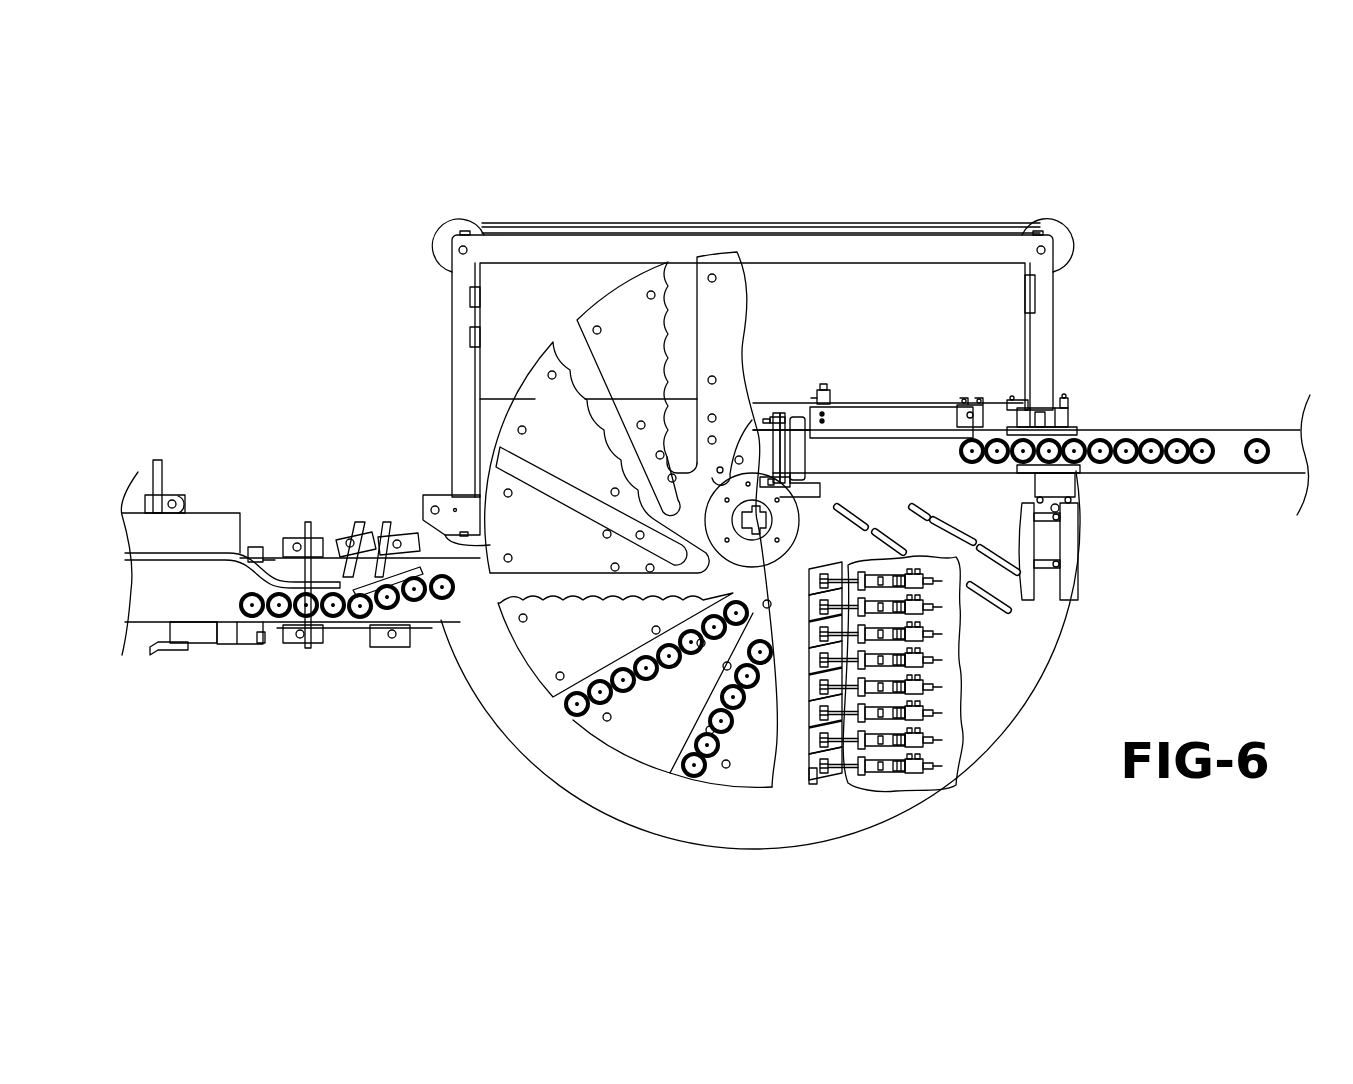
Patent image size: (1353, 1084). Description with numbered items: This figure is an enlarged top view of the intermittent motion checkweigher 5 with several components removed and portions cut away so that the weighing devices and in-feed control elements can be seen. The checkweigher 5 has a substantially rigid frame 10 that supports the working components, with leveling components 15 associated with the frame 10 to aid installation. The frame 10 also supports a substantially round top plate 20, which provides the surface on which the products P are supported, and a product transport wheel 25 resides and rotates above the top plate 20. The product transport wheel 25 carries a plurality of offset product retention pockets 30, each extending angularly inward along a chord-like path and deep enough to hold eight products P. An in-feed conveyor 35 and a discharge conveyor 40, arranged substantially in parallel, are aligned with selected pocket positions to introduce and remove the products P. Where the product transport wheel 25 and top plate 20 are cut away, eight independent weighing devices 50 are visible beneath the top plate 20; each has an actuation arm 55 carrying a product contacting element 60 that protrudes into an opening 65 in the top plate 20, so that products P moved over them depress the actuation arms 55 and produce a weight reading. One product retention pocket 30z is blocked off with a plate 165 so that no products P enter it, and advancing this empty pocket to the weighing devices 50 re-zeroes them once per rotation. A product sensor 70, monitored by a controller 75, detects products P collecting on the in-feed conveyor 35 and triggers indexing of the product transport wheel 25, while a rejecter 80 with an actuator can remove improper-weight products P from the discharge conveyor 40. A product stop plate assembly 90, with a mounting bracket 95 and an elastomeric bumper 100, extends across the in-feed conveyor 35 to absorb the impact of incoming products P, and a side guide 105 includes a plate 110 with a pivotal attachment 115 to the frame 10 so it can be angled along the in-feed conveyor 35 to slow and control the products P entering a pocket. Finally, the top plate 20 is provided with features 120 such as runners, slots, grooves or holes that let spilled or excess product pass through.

The intermittent motion checkweigher 5 is at (707, 522).
The frame 10 is at (738, 344).
The leveling components 15 is at (1062, 243).
The top plate 20 is at (562, 787).
The product transport wheel 25 is at (740, 265).
The product retention pockets 30 is at (677, 300).
The blocked product retention pocket 30z is at (502, 473).
The plate 165 is at (527, 458).
The in-feed conveyor 35 is at (1031, 445).
The discharge conveyor 40 is at (142, 648).
The weighing devices 50 is at (947, 775).
The actuation arm 55 is at (855, 785).
The product contacting element 60 is at (827, 760).
The opening 65 is at (812, 776).
The product sensor 70 is at (1038, 427).
The controller 75 is at (553, 280).
The rejecter 80 is at (238, 660).
The product stop plate assembly 90 is at (790, 400).
The mounting bracket 95 is at (772, 412).
The bumper 100 is at (797, 425).
The side guide 105 is at (912, 388).
The plate 110 is at (848, 418).
The pivotal attachment 115 is at (968, 410).
The features 120 is at (1003, 548).
The products P is at (1205, 433).